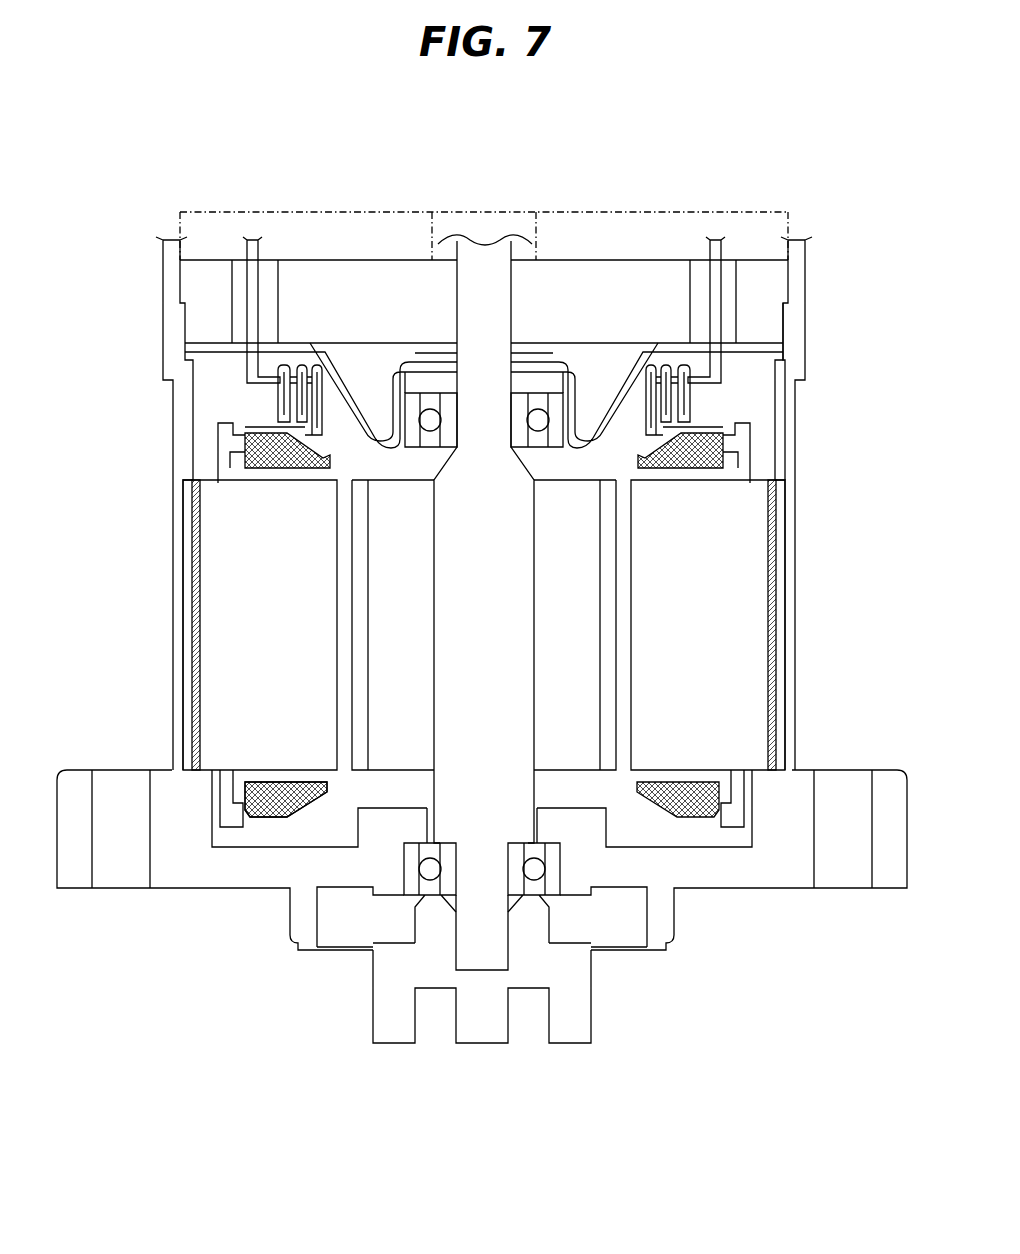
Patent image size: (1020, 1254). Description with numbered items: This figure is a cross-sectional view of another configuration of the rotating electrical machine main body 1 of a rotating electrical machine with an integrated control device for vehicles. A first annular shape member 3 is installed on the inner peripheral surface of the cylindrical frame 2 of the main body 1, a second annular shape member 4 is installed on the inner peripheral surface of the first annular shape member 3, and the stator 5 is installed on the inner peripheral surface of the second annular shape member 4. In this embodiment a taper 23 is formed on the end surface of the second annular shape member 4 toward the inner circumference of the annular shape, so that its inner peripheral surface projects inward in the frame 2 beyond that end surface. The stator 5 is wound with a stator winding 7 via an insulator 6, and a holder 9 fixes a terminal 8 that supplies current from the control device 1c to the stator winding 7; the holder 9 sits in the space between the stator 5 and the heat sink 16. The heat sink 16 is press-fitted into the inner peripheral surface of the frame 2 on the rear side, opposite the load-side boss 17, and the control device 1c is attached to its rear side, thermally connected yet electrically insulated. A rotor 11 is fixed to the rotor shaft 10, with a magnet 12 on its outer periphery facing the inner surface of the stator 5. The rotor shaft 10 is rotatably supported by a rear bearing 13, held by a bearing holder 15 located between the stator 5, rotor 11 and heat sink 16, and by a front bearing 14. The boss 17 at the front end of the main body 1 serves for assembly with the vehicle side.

The rotating electrical machine main body 1 is at (187, 895).
The control device 1c is at (370, 207).
The frame 2 is at (790, 658).
The first annular shape member 3 is at (185, 608).
The second annular shape member 4 is at (187, 647).
The stator 5 is at (782, 577).
The insulator 6 is at (225, 467).
The stator winding 7 is at (247, 435).
The terminal 8 is at (247, 258).
The holder 9 is at (703, 417).
The rotor shaft 10 is at (517, 707).
The rotor 11 is at (397, 607).
The magnet 12 is at (358, 578).
The bearing 13 is at (545, 405).
The bearing 14 is at (558, 893).
The bearing holder 15 is at (413, 365).
The heat sink 16 is at (613, 262).
The boss 17 is at (385, 1007).
The taper 23 is at (797, 480).